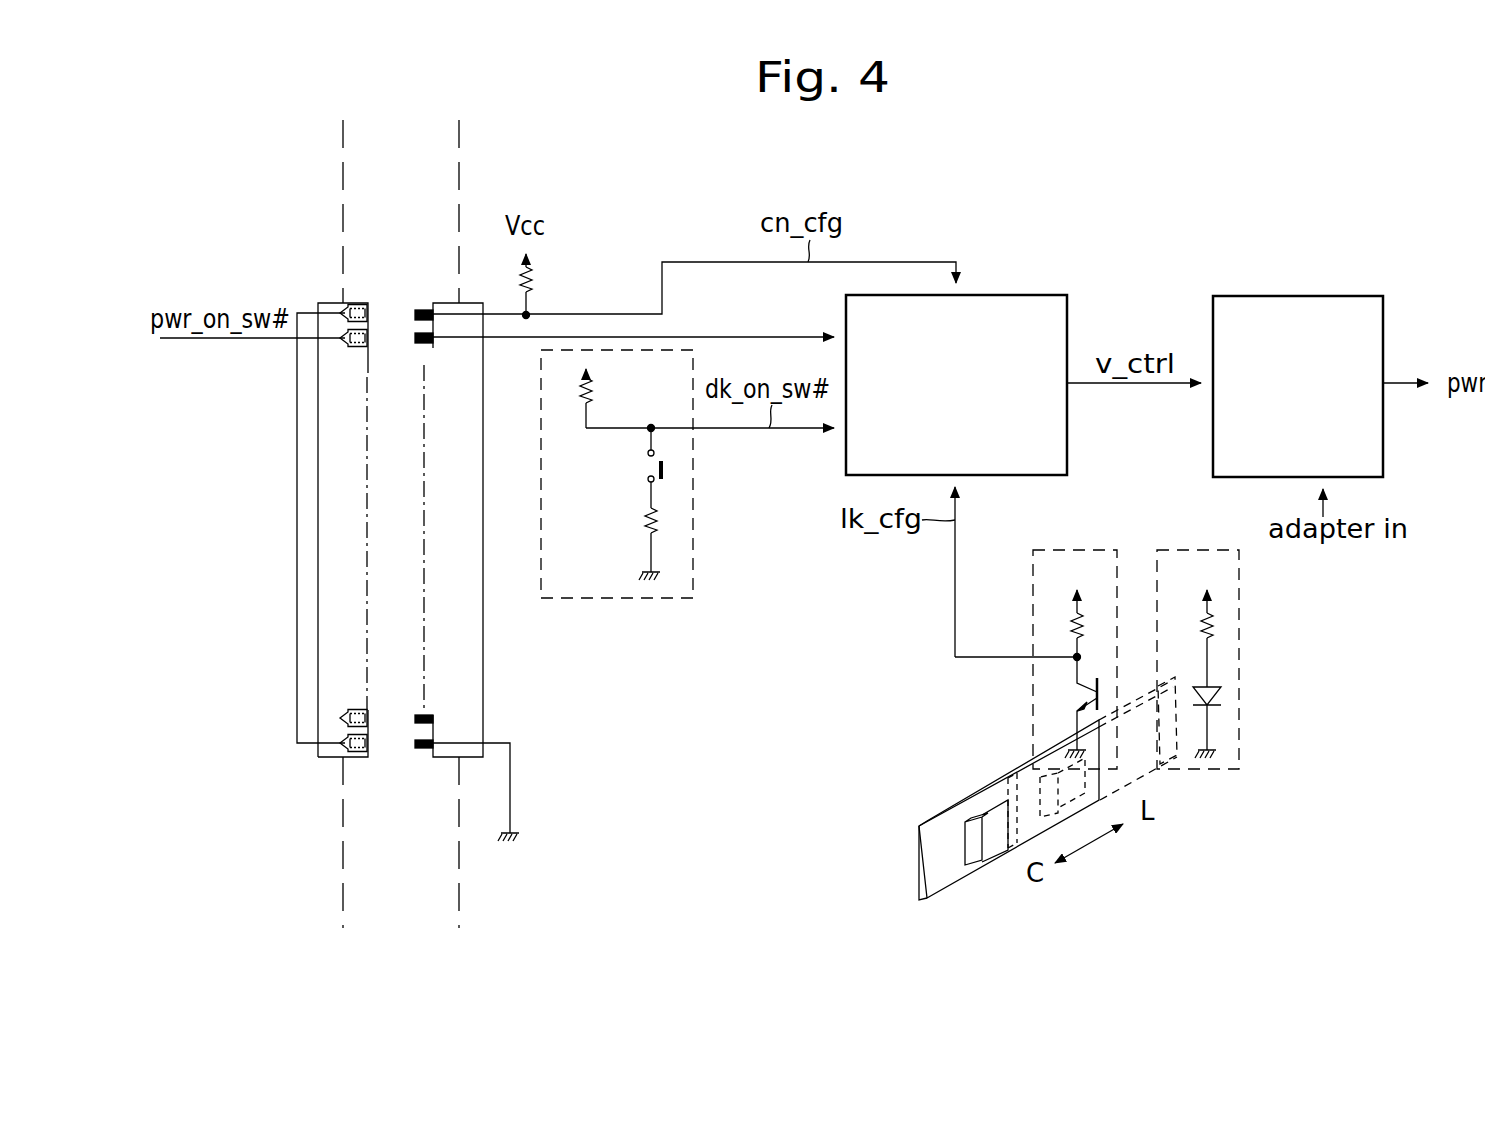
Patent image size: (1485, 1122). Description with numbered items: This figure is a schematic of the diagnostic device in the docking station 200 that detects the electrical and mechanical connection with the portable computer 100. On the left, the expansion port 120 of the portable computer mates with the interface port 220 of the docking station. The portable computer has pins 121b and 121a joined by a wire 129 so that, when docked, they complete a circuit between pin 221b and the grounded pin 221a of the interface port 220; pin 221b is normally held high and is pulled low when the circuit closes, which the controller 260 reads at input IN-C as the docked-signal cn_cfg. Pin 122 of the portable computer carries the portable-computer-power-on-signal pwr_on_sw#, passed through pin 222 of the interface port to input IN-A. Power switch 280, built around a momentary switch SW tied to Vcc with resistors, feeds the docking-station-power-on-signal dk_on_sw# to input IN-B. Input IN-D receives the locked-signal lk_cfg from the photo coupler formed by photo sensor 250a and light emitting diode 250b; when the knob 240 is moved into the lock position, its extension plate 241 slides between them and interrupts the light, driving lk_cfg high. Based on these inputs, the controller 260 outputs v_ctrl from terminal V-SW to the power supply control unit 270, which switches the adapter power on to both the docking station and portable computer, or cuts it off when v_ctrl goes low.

The portable computer 100 is at (355, 188).
The docking station 200 is at (452, 258).
The expansion port 120 is at (328, 567).
The detection loop wire 129 is at (297, 618).
The pin 122 is at (357, 347).
The pin 121b is at (368, 310).
The pin 121a is at (357, 753).
The interface port 220 is at (475, 660).
The pin 222 is at (428, 348).
The pin 221b is at (413, 314).
The pin 221a is at (422, 750).
The power switch 280 is at (667, 600).
The controller 260 is at (1025, 295).
The power supply control unit 270 is at (1318, 296).
The photo sensor 250a is at (1075, 550).
The light emitting diode 250b is at (1208, 550).
The knob 240 is at (983, 852).
The extension plate 241 is at (945, 878).